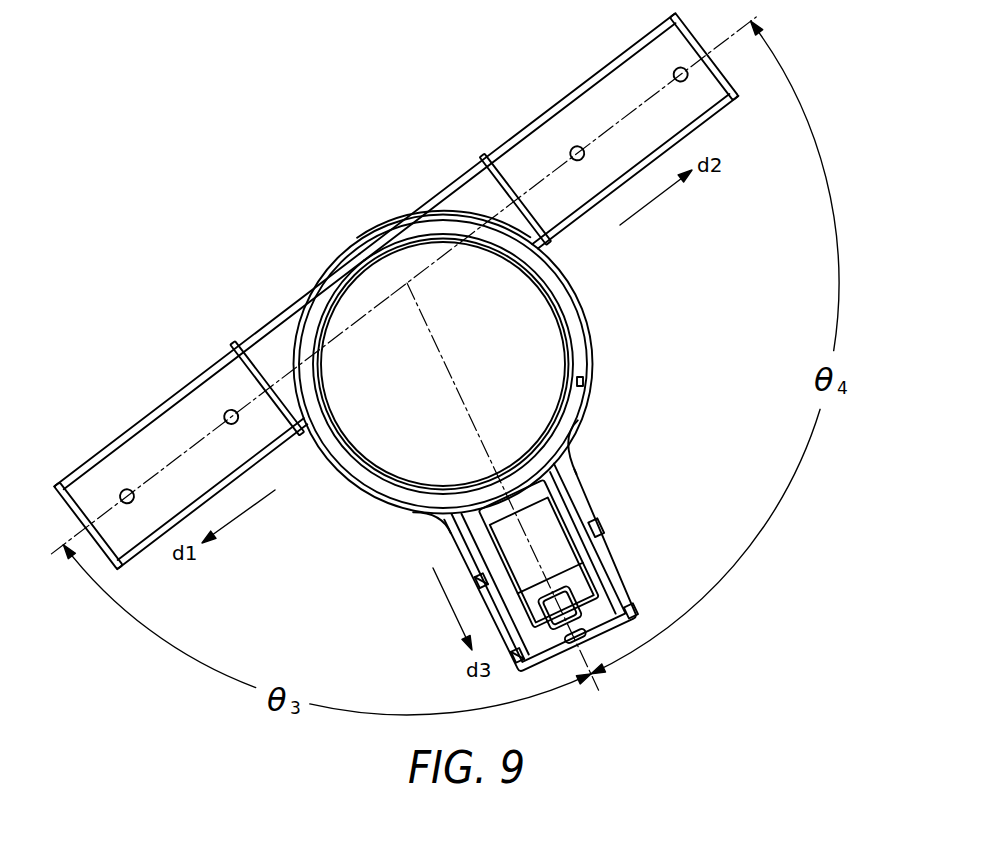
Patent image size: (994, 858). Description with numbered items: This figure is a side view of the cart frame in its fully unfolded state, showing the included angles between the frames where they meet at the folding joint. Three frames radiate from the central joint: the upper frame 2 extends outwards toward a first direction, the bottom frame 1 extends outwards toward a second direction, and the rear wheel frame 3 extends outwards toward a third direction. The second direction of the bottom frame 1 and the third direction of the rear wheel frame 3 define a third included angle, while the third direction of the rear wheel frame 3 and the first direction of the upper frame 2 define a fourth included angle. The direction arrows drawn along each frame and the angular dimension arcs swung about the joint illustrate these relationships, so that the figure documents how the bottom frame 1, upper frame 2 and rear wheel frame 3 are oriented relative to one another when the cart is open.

The bottom frame 1 is at (163, 445).
The upper frame 2 is at (585, 117).
The rear wheel frame 3 is at (613, 572).